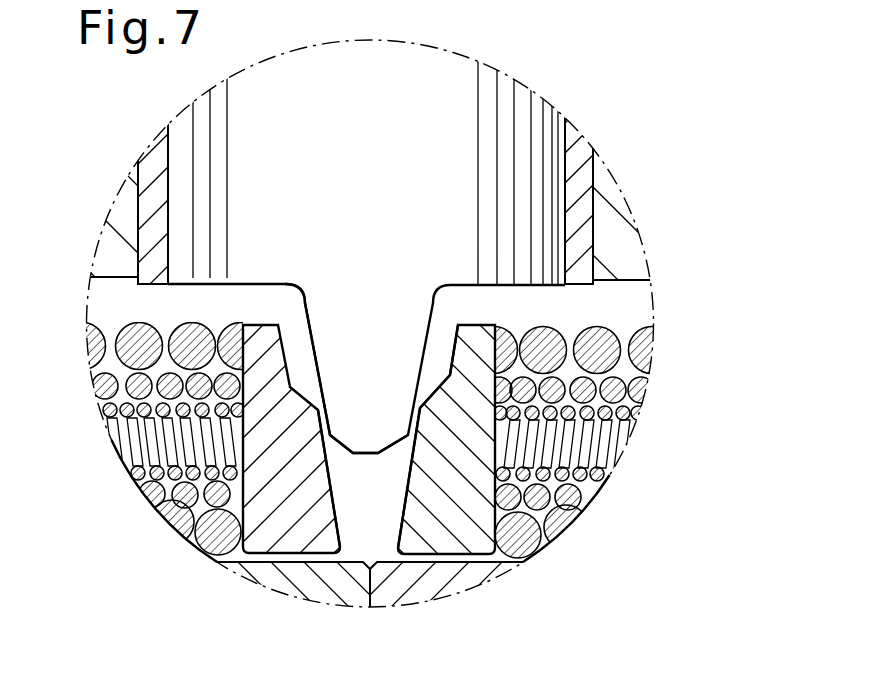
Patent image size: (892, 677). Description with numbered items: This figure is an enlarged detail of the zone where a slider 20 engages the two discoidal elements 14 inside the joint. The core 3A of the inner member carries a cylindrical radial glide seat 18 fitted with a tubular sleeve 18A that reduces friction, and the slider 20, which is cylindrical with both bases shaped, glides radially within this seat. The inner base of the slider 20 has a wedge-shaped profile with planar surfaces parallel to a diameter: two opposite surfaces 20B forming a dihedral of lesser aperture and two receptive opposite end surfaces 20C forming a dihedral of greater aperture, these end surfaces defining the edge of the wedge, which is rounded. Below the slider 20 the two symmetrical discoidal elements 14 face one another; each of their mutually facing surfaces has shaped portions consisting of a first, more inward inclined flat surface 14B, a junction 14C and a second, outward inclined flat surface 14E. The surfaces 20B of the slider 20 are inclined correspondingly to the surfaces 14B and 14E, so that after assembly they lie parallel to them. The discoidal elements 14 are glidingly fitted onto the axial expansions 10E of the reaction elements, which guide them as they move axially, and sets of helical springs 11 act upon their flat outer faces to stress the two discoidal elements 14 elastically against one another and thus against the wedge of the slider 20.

The core 3A is at (613, 245).
The cylindrical radial glide seat 18 is at (556, 153).
The tubular sleeve 18A is at (575, 220).
The slider 20 is at (322, 114).
The opposite surfaces 20B is at (307, 327).
The receptive opposite end surfaces 20C is at (368, 457).
The discoidal element 14 is at (300, 540).
The second outward inclined flat surface 14E is at (448, 353).
The junction 14C is at (438, 396).
The first inward inclined flat surface 14B is at (407, 462).
The helical springs 11 is at (100, 474).
The axial expansion 10E is at (350, 600).